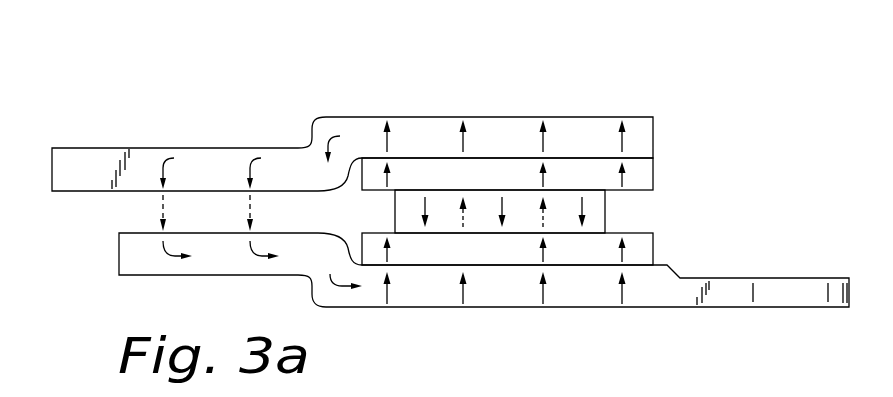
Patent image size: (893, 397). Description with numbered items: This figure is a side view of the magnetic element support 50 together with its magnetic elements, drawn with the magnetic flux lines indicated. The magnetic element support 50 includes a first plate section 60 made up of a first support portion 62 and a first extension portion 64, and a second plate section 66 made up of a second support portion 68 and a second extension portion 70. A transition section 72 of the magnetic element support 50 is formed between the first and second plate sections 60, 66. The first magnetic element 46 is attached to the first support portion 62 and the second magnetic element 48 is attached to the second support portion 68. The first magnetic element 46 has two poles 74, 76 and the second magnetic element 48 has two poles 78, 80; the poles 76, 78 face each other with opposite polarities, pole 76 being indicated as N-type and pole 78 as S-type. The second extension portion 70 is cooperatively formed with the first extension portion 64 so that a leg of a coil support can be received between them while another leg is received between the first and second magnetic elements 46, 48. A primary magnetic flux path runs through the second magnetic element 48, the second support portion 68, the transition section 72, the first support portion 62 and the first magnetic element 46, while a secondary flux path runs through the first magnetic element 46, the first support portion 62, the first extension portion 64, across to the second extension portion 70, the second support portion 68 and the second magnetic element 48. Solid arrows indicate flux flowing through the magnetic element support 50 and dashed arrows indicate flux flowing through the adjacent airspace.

The magnetic element support 50 is at (243, 78).
The second extension portion 70 is at (175, 147).
The first extension portion 64 is at (235, 277).
The second magnetic element 48 is at (654, 171).
The first magnetic element 46 is at (654, 246).
The transition section 72 is at (607, 207).
The second plate section 66 is at (607, 127).
The second support portion 68 is at (560, 127).
The first plate section 60 is at (600, 298).
The first support portion 62 is at (650, 298).
The pole 78 is at (472, 167).
The pole 80 is at (458, 178).
The pole 76 is at (472, 243).
The pole 74 is at (452, 256).